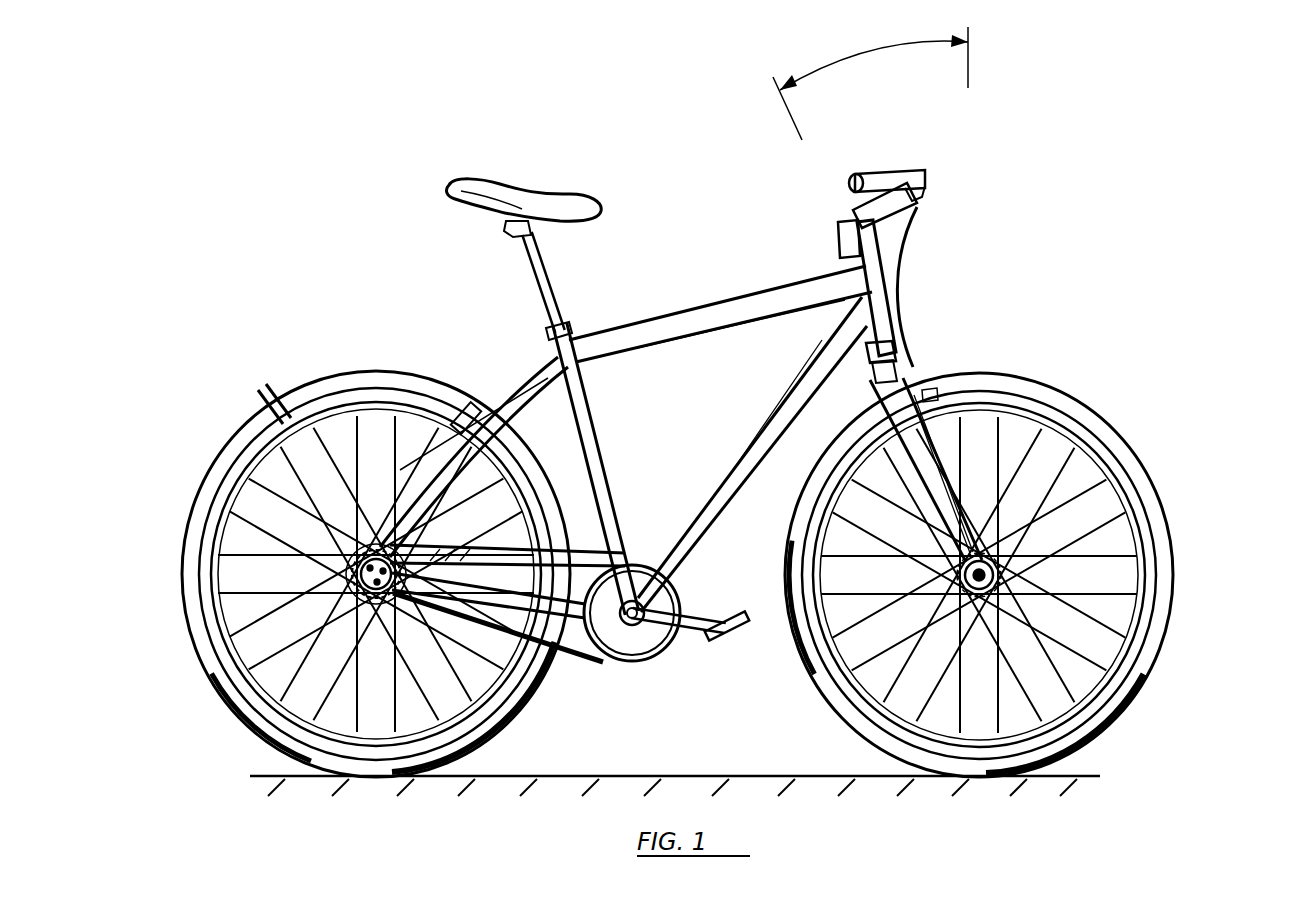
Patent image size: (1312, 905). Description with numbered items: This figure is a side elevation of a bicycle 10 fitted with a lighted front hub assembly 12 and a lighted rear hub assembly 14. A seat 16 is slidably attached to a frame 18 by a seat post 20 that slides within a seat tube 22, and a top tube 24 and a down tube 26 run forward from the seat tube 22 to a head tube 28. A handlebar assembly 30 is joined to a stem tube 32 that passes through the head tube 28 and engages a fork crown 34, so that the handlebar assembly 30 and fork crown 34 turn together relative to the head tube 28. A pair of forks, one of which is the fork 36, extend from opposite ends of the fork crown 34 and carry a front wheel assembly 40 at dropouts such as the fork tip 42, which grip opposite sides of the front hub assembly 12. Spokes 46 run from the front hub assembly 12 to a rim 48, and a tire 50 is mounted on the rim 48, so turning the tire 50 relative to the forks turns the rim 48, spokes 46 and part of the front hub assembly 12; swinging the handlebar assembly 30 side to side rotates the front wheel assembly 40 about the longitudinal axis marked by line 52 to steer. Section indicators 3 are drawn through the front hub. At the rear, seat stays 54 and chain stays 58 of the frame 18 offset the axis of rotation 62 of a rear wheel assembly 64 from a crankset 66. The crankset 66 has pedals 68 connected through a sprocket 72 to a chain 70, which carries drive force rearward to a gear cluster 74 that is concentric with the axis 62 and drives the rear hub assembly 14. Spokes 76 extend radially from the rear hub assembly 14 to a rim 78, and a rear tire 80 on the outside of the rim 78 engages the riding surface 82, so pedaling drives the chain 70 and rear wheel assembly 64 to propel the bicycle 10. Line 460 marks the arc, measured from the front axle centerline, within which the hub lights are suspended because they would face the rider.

The bicycle 10 is at (691, 92).
The front hub assembly 12 is at (1000, 576).
The rear hub assembly 14 is at (350, 547).
The seat 16 is at (521, 188).
The frame 18 is at (719, 316).
The seat post 20 is at (538, 290).
The seat tube 22 is at (606, 464).
The top tube 24 is at (659, 336).
The down tube 26 is at (767, 417).
The head tube 28 is at (855, 306).
The handlebar assembly 30 is at (886, 172).
The stem tube 32 is at (836, 250).
The fork crown 34 is at (915, 335).
The fork 36 is at (918, 365).
The front wheel assembly 40 is at (1160, 365).
The fork tip 42 is at (940, 564).
The spokes 46 is at (1150, 605).
The rim 48 is at (1150, 544).
The tire 50 is at (1165, 510).
The longitudinal axis 52 is at (1285, 447).
The seat stay 54 is at (517, 417).
The chain stay 58 is at (538, 542).
The axis of rotation 62 is at (352, 612).
The rear wheel assembly 64 is at (345, 352).
The crankset 66 is at (602, 690).
The pedals 68 is at (720, 640).
The chain 70 is at (571, 660).
The sprocket 72 is at (657, 593).
The gear cluster 74 is at (312, 567).
The spokes 76 is at (272, 395).
The rim 78 is at (222, 653).
The rear tire 80 is at (200, 630).
The riding surface 82 is at (712, 740).
The arc line 460 is at (886, 48).
The section line 3- 3 is at (1020, 478).